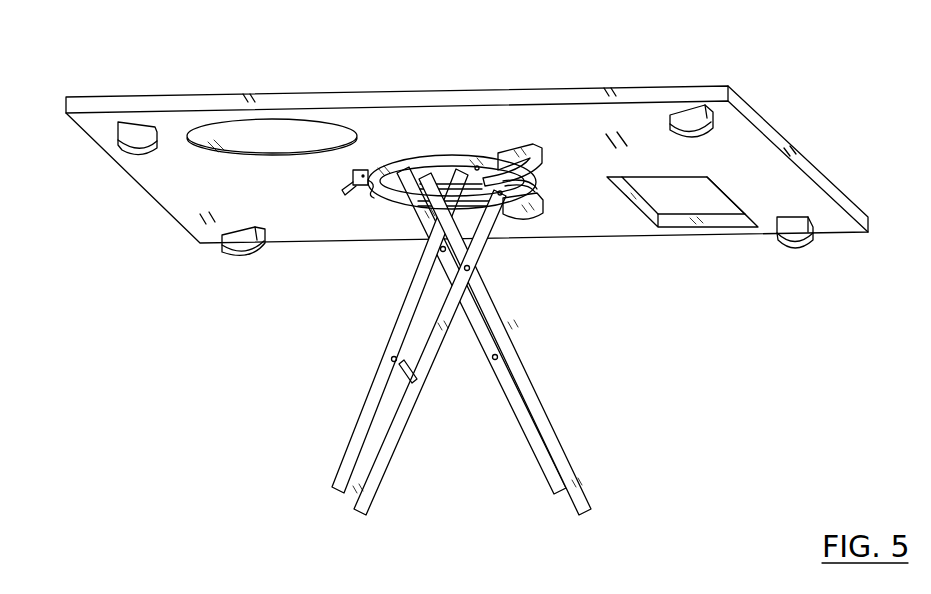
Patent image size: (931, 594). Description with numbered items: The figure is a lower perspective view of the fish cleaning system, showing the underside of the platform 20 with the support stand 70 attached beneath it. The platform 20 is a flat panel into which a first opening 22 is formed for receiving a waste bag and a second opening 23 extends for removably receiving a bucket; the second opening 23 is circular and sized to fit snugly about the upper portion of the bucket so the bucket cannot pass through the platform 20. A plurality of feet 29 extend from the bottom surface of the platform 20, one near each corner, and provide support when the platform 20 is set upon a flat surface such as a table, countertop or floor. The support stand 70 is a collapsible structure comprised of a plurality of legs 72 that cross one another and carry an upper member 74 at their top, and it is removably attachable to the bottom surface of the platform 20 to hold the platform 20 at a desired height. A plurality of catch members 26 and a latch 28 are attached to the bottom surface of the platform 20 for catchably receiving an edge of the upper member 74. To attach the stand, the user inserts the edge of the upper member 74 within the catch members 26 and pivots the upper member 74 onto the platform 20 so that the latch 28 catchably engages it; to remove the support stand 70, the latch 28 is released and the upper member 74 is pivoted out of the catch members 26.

The platform 20 is at (569, 93).
The first opening 22 is at (722, 222).
The second opening 23 is at (355, 126).
The catch members 26 is at (537, 164).
The latch 28 is at (370, 187).
The feet 29 is at (128, 133).
The support stand 70 is at (447, 340).
The legs 72 is at (387, 376).
The upper member 74 is at (455, 155).